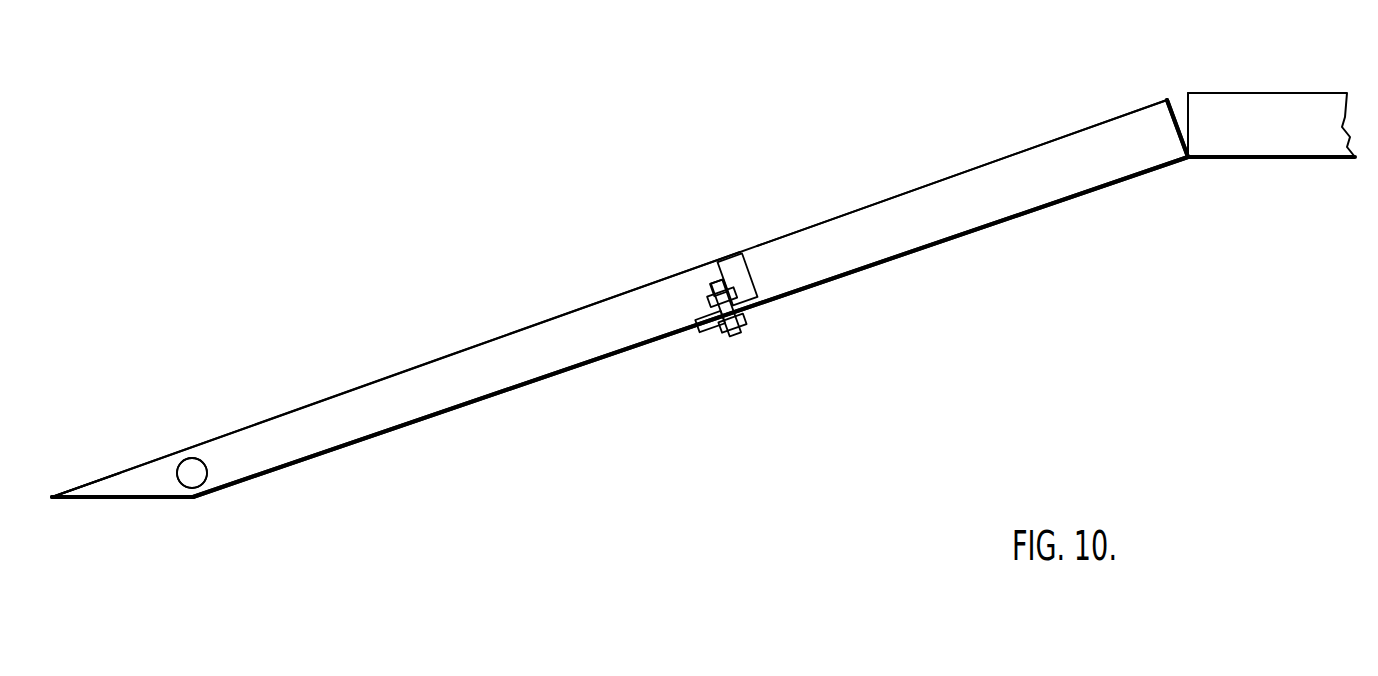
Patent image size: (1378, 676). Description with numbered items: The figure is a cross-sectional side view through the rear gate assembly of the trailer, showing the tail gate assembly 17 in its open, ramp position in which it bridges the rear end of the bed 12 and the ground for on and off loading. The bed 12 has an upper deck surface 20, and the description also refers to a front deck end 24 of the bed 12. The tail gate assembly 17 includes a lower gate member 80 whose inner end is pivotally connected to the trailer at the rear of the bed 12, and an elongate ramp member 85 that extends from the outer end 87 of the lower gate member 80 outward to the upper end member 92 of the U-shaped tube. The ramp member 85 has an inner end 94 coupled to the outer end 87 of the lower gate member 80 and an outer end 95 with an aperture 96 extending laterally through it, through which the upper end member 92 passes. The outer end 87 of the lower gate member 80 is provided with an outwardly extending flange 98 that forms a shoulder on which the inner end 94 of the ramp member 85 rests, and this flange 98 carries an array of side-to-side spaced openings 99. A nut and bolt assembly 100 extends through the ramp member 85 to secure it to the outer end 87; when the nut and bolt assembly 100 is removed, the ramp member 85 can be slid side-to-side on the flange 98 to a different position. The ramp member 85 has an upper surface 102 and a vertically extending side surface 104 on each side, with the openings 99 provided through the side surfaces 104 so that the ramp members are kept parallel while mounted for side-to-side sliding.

The bed 12 is at (1255, 135).
The tail gate assembly 17 is at (372, 198).
The upper deck surface 20 is at (1287, 93).
The front deck end 24 is at (1188, 110).
The lower gate member 80 is at (927, 187).
The ramp member 85 is at (535, 323).
The outer end 87 is at (745, 252).
The upper end member 92 is at (187, 484).
The inner end 94 is at (730, 268).
The outer end 95 is at (52, 495).
The aperture 96 is at (200, 458).
The flange 98 is at (710, 328).
The openings 99 is at (742, 305).
The nut and bolt assembly 100 is at (738, 342).
The upper surface 102 is at (375, 378).
The side surface 104 is at (412, 405).